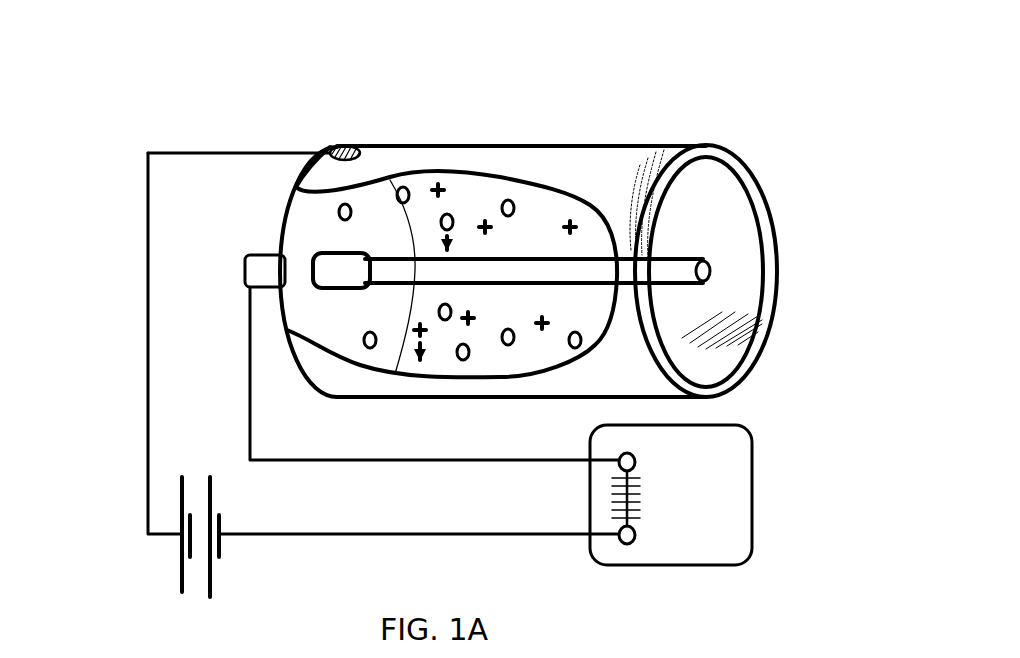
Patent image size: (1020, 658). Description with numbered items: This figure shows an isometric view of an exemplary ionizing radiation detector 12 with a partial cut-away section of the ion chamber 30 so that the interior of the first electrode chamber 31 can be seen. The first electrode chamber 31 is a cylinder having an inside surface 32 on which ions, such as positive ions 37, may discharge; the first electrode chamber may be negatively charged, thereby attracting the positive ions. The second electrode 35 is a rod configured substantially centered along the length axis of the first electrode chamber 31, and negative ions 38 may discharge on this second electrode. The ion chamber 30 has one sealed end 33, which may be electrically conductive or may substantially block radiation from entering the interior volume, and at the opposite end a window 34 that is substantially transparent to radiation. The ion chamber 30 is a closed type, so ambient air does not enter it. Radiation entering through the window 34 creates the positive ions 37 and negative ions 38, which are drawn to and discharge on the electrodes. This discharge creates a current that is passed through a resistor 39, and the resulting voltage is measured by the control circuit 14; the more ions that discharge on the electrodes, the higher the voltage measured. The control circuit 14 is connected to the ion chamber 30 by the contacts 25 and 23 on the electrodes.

The ionizing radiation detector 12 is at (203, 70).
The control circuit 14 is at (698, 498).
The contact 23 is at (330, 150).
The contact 25 is at (245, 277).
The ion chamber 30 is at (396, 141).
The first electrode chamber 31 is at (627, 173).
The inside surface 32 is at (548, 207).
The sealed end 33 is at (313, 313).
The window 34 is at (721, 196).
The second electrode 35 is at (703, 262).
The positive ions 37 is at (422, 332).
The negative ions 38 is at (455, 212).
The resistor 39 is at (633, 507).